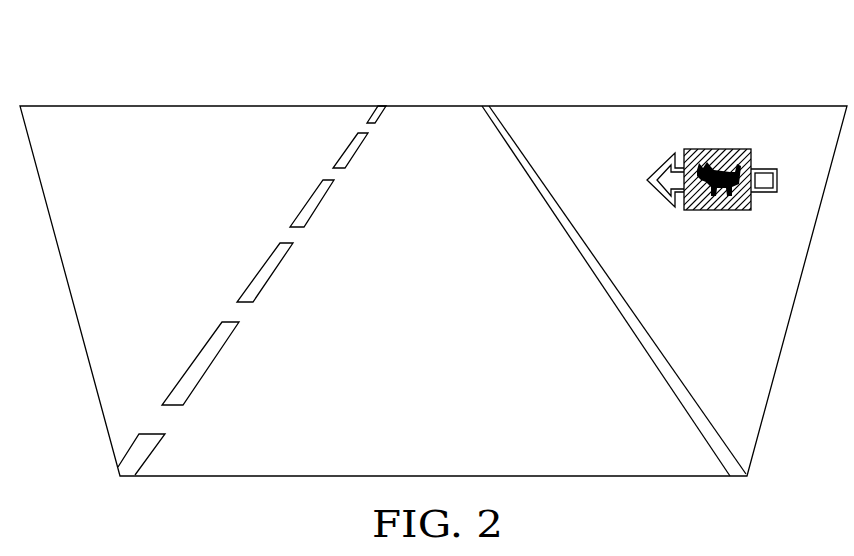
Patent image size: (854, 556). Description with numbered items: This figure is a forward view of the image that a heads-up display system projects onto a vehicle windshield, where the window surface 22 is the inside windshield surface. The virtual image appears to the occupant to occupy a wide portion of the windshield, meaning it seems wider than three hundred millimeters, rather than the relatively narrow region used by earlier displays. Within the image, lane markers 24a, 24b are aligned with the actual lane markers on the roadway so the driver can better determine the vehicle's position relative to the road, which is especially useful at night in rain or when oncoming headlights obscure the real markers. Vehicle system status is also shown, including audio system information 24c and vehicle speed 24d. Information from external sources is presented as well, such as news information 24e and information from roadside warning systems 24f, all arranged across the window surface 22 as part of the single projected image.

The window surface 22 is at (265, 170).
The lane marker 24a is at (353, 143).
The lane marker 24b is at (513, 142).
The audio system information 24c is at (93, 158).
The vehicle speed 24d is at (237, 448).
The news information 24e is at (638, 448).
The roadside warning systems 24f is at (765, 171).